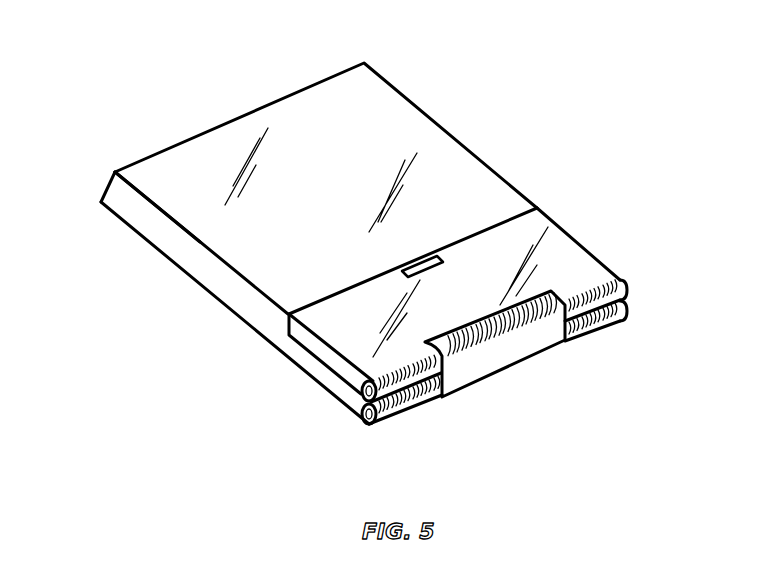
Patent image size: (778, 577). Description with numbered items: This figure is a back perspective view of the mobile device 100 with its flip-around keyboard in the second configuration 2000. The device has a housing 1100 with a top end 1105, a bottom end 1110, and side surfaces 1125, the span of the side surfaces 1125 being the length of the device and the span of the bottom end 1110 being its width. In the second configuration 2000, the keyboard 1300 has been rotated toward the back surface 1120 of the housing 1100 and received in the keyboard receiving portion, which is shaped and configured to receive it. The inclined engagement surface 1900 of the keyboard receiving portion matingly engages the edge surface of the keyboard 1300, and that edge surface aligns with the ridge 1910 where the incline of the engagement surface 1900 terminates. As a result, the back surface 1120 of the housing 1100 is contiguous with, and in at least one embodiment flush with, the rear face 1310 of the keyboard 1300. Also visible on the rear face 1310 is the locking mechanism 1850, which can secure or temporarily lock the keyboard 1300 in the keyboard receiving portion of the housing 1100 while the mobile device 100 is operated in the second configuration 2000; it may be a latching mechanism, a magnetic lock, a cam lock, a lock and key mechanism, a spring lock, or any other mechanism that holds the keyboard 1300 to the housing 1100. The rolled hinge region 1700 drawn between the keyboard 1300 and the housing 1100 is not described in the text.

The mobile device 100 is at (158, 70).
The housing 1100 is at (136, 178).
The top end 1105 is at (103, 184).
The back surface 1120 is at (180, 203).
The side surfaces 1125 is at (207, 265).
The engagement surface 1900 is at (285, 322).
The keyboard 1300 is at (338, 365).
The bottom end 1110 is at (421, 407).
The hinge sleeve 1700 is at (507, 357).
The rear face 1310 is at (573, 273).
The ridge 1910 is at (540, 213).
The locking mechanism 1850 is at (430, 258).
The second configuration 2000 is at (596, 113).